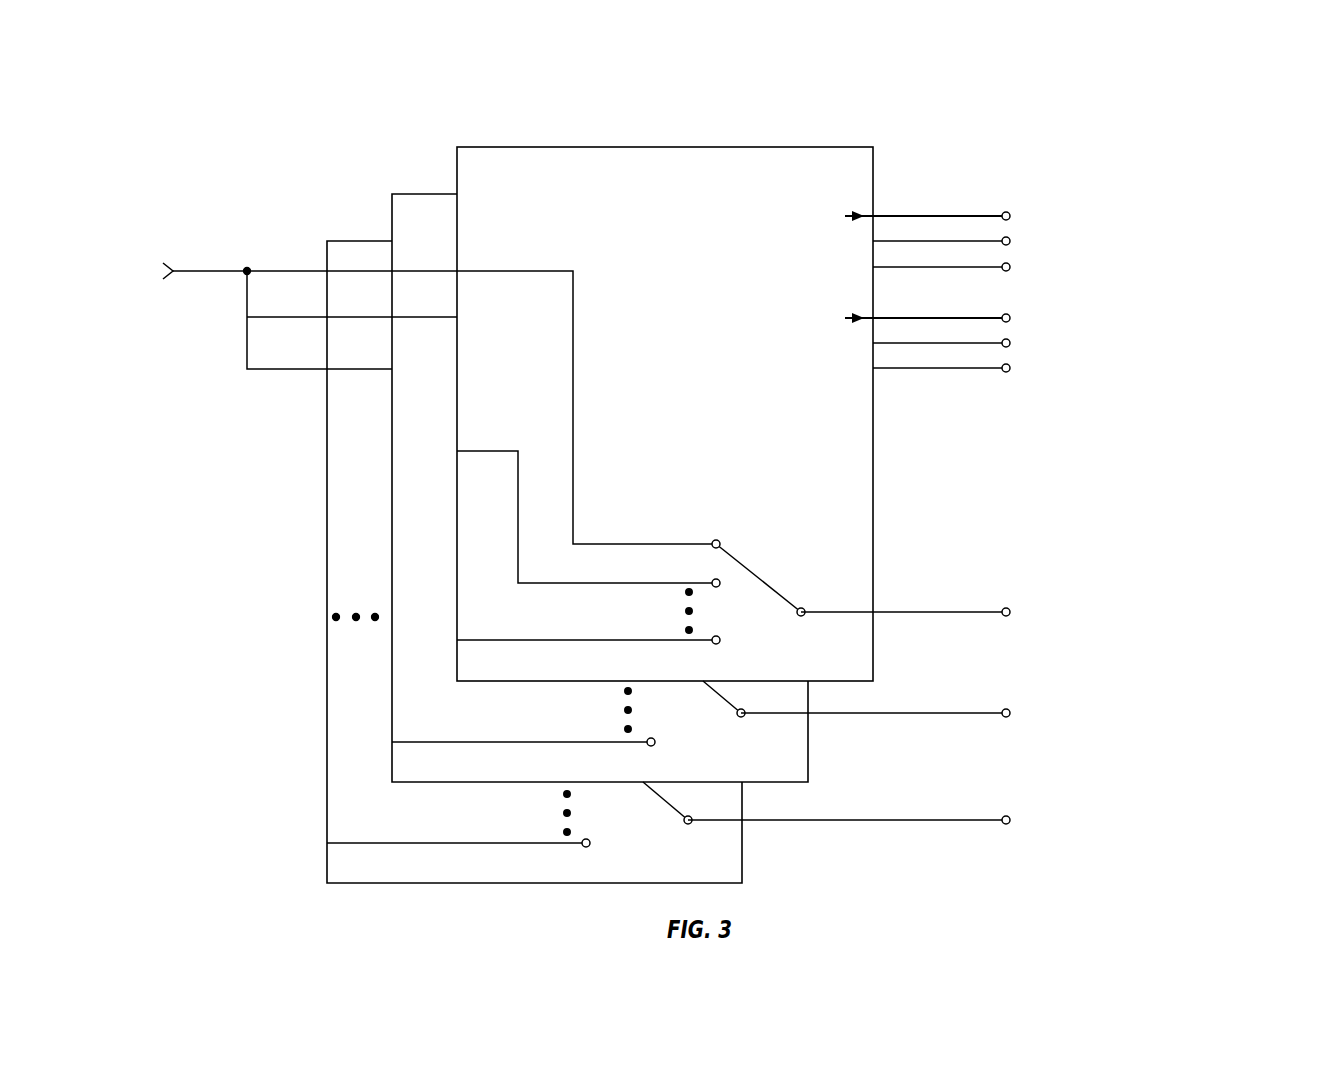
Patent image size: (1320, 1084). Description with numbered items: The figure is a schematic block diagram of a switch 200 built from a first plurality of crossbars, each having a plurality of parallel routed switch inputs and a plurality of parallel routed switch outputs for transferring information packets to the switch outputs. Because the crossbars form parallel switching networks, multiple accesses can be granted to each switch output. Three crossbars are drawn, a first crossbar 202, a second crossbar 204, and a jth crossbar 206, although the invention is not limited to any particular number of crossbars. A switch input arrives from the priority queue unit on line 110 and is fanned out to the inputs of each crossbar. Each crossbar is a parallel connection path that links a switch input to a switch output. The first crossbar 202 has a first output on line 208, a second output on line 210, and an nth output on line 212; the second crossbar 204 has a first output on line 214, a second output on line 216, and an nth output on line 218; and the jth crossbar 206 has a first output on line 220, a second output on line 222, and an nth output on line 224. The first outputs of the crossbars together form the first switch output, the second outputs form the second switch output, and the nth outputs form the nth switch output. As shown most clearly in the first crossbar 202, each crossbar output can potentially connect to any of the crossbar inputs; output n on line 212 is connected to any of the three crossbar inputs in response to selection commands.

The line 110 is at (219, 270).
The switch 200 is at (918, 112).
The first crossbar 202 is at (856, 181).
The second crossbar 204 is at (767, 772).
The jth crossbar 206 is at (702, 878).
The line 208 is at (1011, 215).
The line 210 is at (1011, 317).
The line 212 is at (920, 612).
The line 214 is at (1011, 240).
The line 216 is at (1011, 342).
The line 218 is at (920, 713).
The line 220 is at (1011, 266).
The line 222 is at (1011, 367).
The line 224 is at (920, 820).